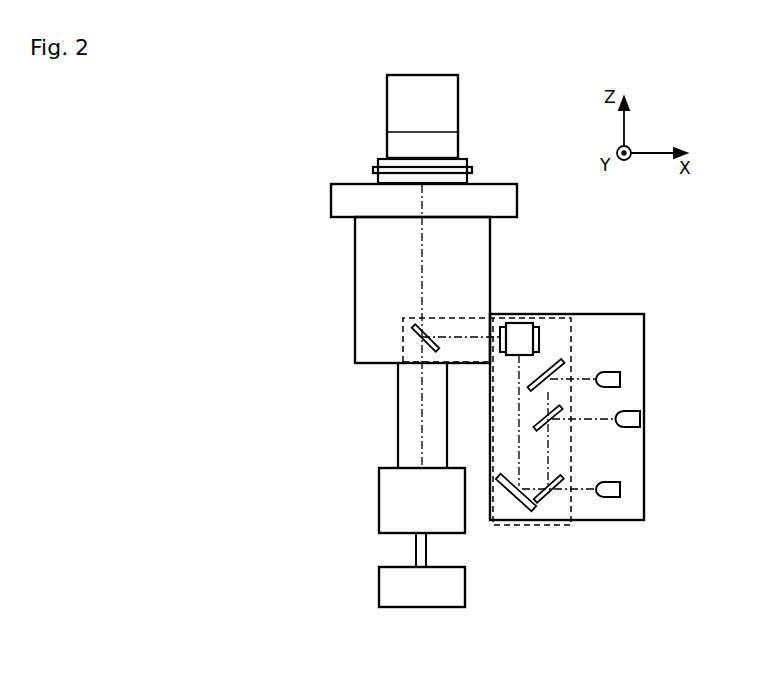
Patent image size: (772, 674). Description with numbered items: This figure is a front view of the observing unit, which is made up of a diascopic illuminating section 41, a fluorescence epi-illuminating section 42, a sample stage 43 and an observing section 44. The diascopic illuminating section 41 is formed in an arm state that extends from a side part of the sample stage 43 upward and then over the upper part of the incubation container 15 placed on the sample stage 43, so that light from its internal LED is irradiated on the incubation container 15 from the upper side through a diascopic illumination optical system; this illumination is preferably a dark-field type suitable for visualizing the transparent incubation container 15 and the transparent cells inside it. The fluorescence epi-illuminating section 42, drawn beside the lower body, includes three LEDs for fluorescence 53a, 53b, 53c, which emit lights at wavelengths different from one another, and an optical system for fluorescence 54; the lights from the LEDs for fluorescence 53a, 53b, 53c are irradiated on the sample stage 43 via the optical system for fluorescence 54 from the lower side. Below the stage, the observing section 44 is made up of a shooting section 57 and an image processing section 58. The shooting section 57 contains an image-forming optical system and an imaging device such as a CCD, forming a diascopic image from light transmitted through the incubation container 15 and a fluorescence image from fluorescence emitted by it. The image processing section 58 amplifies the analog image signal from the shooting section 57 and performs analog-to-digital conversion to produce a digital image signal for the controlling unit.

The diascopic illuminating section 41 is at (458, 103).
The incubation container 15 is at (472, 167).
The sample stage 43 is at (517, 203).
The observing section 44 is at (397, 414).
The shooting section 57 is at (378, 502).
The image processing section 58 is at (378, 587).
The fluorescence epi-illuminating section 42 is at (644, 340).
The optical system for fluorescence 54 is at (537, 525).
The LED for fluorescence 53a is at (620, 380).
The LED for fluorescence 53b is at (640, 420).
The LED for fluorescence 53c is at (620, 490).